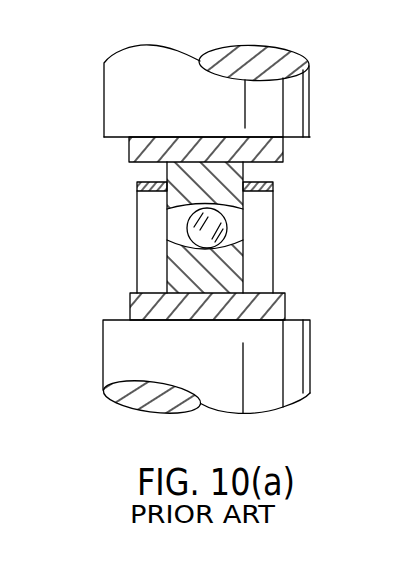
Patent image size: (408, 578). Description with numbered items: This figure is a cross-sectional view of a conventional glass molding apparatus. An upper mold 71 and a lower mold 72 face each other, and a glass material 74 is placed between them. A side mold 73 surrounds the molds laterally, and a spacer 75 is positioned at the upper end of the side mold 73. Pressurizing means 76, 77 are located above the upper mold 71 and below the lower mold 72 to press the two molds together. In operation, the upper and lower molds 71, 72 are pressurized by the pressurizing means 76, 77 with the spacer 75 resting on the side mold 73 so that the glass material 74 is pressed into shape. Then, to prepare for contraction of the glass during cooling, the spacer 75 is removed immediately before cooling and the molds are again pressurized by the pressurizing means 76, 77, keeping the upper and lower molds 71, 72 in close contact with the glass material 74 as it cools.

The pressurizing means 76 is at (113, 78).
The upper mold 71 is at (130, 152).
The spacer 75 is at (273, 187).
The glass material 74 is at (187, 228).
The side mold 73 is at (268, 252).
The lower mold 72 is at (130, 297).
The pressurizing means 77 is at (108, 343).